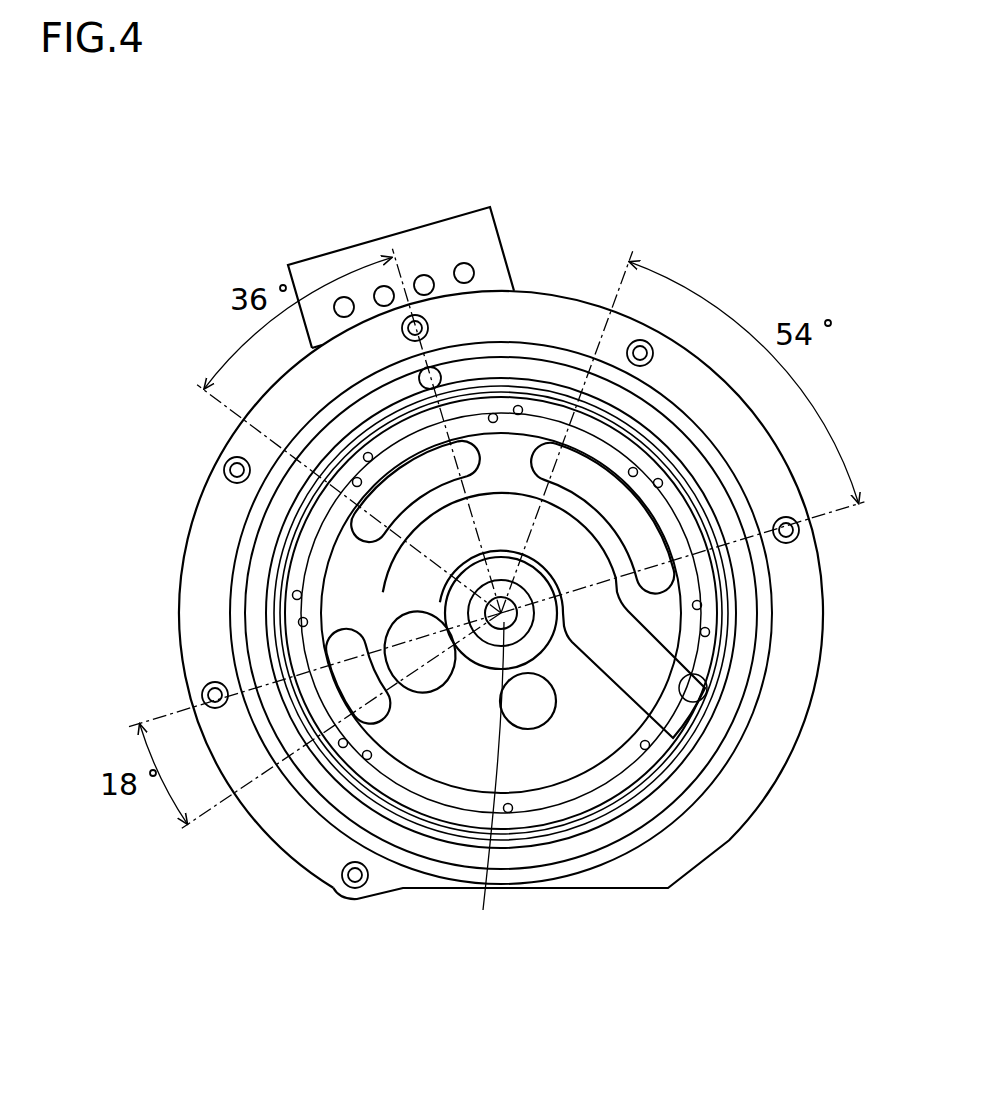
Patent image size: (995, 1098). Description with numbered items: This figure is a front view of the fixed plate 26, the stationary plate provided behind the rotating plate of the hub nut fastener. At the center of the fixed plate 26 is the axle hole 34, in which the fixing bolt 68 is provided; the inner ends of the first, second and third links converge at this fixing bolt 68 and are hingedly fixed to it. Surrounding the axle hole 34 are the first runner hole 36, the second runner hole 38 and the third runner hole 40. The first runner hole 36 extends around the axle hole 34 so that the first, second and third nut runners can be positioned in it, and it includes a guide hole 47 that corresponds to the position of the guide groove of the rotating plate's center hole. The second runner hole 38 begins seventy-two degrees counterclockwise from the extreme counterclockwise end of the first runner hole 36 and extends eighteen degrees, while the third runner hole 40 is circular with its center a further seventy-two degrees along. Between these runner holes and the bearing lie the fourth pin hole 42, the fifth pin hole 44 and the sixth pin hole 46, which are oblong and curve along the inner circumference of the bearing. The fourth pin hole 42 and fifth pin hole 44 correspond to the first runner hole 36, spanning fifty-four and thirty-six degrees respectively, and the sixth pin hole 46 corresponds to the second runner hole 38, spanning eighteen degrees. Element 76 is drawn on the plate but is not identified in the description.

The fixed plate 26 is at (813, 627).
The axle hole 34 is at (467, 648).
The first runner hole 36 is at (500, 503).
The second runner hole 38 is at (393, 632).
The third runner hole 40 is at (542, 712).
The fourth pin hole 42 is at (648, 537).
The fifth pin hole 44 is at (373, 506).
The sixth pin hole 46 is at (350, 668).
The guide hole 47 is at (707, 705).
The fixing bolt 68 is at (481, 782).
The mounting bracket 76 is at (447, 232).